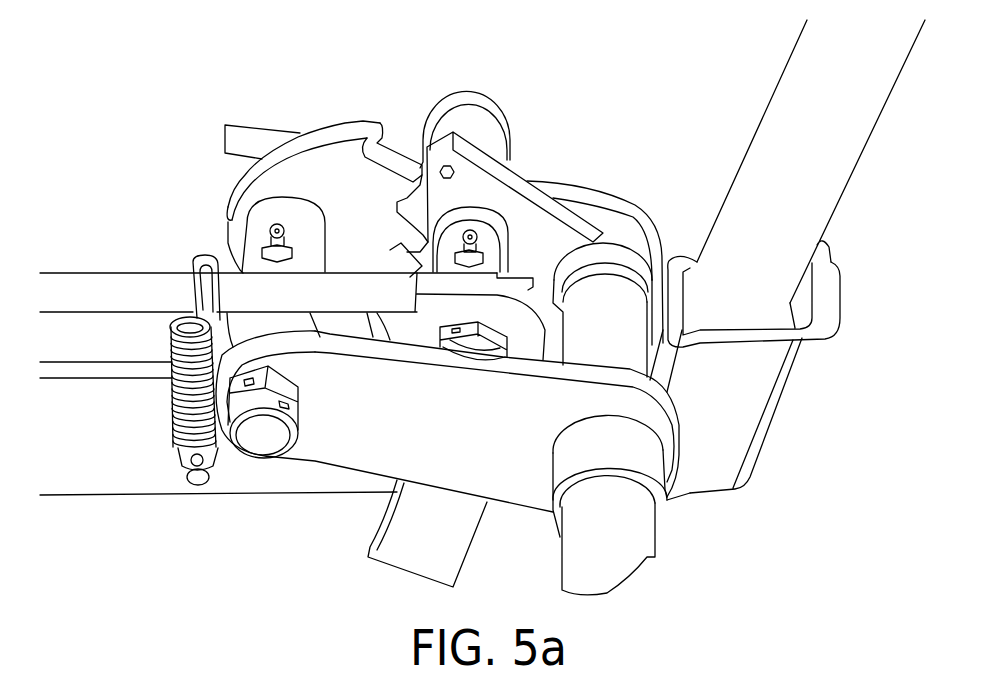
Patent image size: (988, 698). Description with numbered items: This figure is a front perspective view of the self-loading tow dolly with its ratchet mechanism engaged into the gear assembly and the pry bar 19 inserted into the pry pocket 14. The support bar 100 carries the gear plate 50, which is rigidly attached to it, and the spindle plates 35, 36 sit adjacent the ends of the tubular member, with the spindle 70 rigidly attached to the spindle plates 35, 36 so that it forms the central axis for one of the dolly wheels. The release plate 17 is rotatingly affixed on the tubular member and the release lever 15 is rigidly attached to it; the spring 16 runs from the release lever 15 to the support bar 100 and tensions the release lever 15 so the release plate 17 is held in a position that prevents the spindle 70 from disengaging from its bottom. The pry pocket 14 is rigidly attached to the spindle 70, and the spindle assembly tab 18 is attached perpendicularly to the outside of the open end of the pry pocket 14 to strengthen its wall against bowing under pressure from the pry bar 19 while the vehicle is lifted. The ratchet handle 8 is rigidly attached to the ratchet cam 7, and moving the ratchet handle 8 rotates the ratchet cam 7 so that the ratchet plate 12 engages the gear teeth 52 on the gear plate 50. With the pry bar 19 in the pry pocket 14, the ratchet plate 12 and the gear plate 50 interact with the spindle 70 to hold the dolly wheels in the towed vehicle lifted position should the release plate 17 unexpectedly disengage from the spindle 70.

The support bar 100 is at (110, 459).
The ratchet cam 7 is at (433, 113).
The ratchet handle 8 is at (233, 138).
The ratchet plate 12 is at (510, 193).
The pry pocket 14 is at (738, 443).
The release lever 15 is at (175, 290).
The spring 16 is at (180, 425).
The release plate 17 is at (398, 537).
The spindle assembly tab 18 is at (840, 244).
The pry bar 19 is at (782, 132).
The spindle plate 35 is at (530, 483).
The spindle plate 36 is at (650, 243).
The gear plate 50 is at (327, 142).
The gear teeth 52 is at (367, 140).
The spindle 70 is at (643, 543).